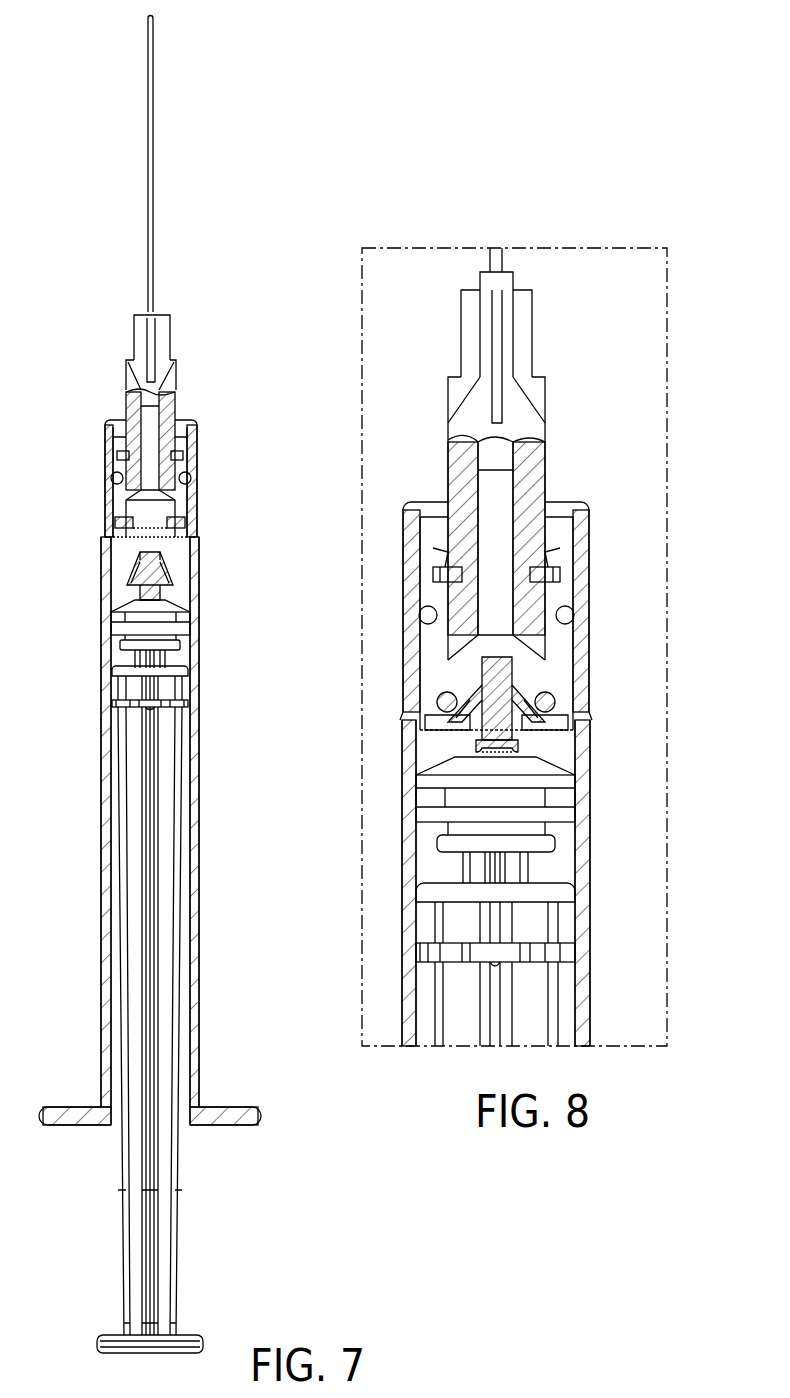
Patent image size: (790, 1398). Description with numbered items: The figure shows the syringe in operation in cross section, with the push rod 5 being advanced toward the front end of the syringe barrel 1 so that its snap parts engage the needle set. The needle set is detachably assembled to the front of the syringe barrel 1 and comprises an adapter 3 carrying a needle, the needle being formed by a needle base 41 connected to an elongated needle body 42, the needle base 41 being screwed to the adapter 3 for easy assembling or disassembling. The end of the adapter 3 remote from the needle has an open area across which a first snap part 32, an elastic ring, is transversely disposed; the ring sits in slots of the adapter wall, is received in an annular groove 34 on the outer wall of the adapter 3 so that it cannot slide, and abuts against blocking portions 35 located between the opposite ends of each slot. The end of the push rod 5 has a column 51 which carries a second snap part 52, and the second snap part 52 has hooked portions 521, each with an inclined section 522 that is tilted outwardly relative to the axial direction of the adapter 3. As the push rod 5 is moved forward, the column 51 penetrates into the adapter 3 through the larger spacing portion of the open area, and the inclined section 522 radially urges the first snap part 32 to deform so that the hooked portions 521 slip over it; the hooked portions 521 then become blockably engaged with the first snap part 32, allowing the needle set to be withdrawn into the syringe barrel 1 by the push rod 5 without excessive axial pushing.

In FIG. 7, the syringe barrel 1 is at (195, 792).
In FIG. 8, the syringe barrel 1 is at (586, 843).
In FIG. 7, the adapter 3 is at (155, 478).
In FIG. 8, the adapter 3 is at (532, 605).
In FIG. 7, the push rod 5 is at (172, 850).
In FIG. 8, the push rod 5 is at (540, 998).
In FIG. 7, the first snap part 32 is at (118, 528).
In FIG. 8, the first snap part 32 is at (558, 700).
In FIG. 7, the annular groove 34 is at (116, 521).
In FIG. 8, the annular groove 34 is at (432, 701).
In FIG. 7, the blocking portion 35 is at (150, 525).
In FIG. 7, the needle base 41 is at (136, 378).
In FIG. 7, the needle body 42 is at (148, 270).
In FIG. 7, the column 51 is at (142, 590).
In FIG. 8, the column 51 is at (520, 738).
In FIG. 7, the second snap part 52 is at (157, 575).
In FIG. 8, the second snap part 52 is at (522, 690).
In FIG. 7, the hooked portion 521 is at (158, 594).
In FIG. 8, the hooked portion 521 is at (545, 712).
In FIG. 7, the inclined section 522 is at (160, 572).
In FIG. 8, the inclined section 522 is at (527, 683).